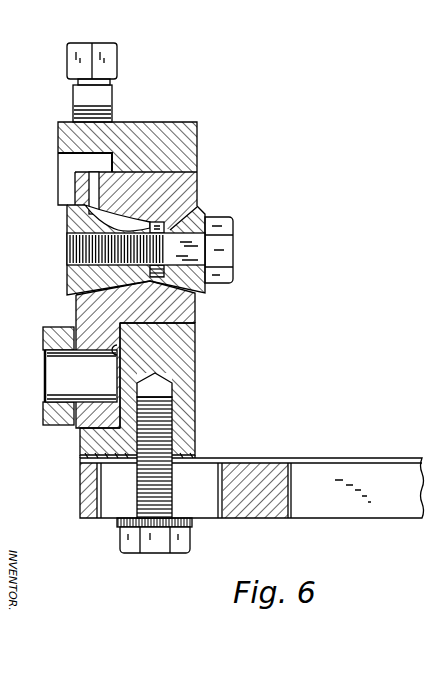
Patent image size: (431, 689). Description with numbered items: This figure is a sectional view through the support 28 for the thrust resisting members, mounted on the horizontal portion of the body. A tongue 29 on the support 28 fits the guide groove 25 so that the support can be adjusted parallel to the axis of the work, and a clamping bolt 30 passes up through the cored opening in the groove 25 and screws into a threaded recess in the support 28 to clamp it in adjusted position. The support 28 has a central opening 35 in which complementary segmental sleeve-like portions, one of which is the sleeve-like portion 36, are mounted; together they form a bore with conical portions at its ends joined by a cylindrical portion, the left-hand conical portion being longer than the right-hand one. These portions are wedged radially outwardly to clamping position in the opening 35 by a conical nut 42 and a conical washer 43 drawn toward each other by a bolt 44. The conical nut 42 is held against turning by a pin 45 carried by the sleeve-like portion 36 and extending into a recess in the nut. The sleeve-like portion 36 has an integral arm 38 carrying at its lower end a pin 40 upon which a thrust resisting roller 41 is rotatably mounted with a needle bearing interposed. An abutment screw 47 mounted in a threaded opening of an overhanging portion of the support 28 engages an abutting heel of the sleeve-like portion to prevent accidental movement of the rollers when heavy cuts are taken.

The guide groove 25 is at (233, 458).
The support 28 is at (197, 390).
The tongue 29 is at (182, 470).
The clamping bolt 30 is at (148, 540).
The central opening 35 is at (197, 321).
The segmental sleeve-like portion 36 is at (199, 308).
The integral arm 38 is at (83, 318).
The pin 40 is at (81, 373).
The thrust resisting roller 41 is at (64, 418).
The conical nut 42 is at (72, 222).
The conical washer 43 is at (205, 207).
The bolt 44 is at (98, 249).
The pin 45 is at (89, 185).
The abutment screw 47 is at (110, 107).